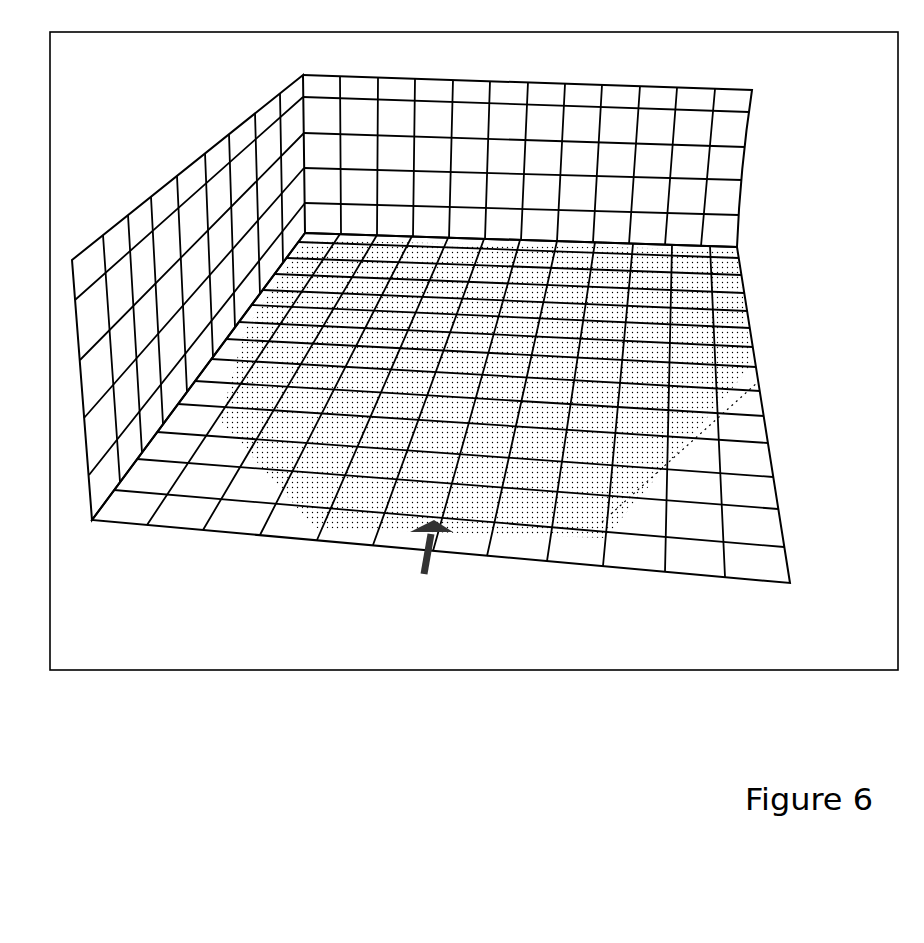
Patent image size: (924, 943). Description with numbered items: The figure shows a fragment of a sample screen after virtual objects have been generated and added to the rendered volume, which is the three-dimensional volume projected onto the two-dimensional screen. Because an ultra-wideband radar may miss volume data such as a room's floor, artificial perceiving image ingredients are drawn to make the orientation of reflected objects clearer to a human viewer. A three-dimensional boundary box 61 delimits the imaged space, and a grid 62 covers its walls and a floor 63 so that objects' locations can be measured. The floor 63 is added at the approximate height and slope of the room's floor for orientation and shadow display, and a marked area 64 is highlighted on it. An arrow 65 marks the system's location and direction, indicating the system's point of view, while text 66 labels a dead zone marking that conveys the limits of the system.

The 3D boundary box 61 is at (258, 88).
The grid 62 is at (604, 140).
The floor 63 is at (762, 346).
The marked area 64 is at (500, 395).
The arrow 65 is at (410, 560).
The text 66 is at (650, 562).